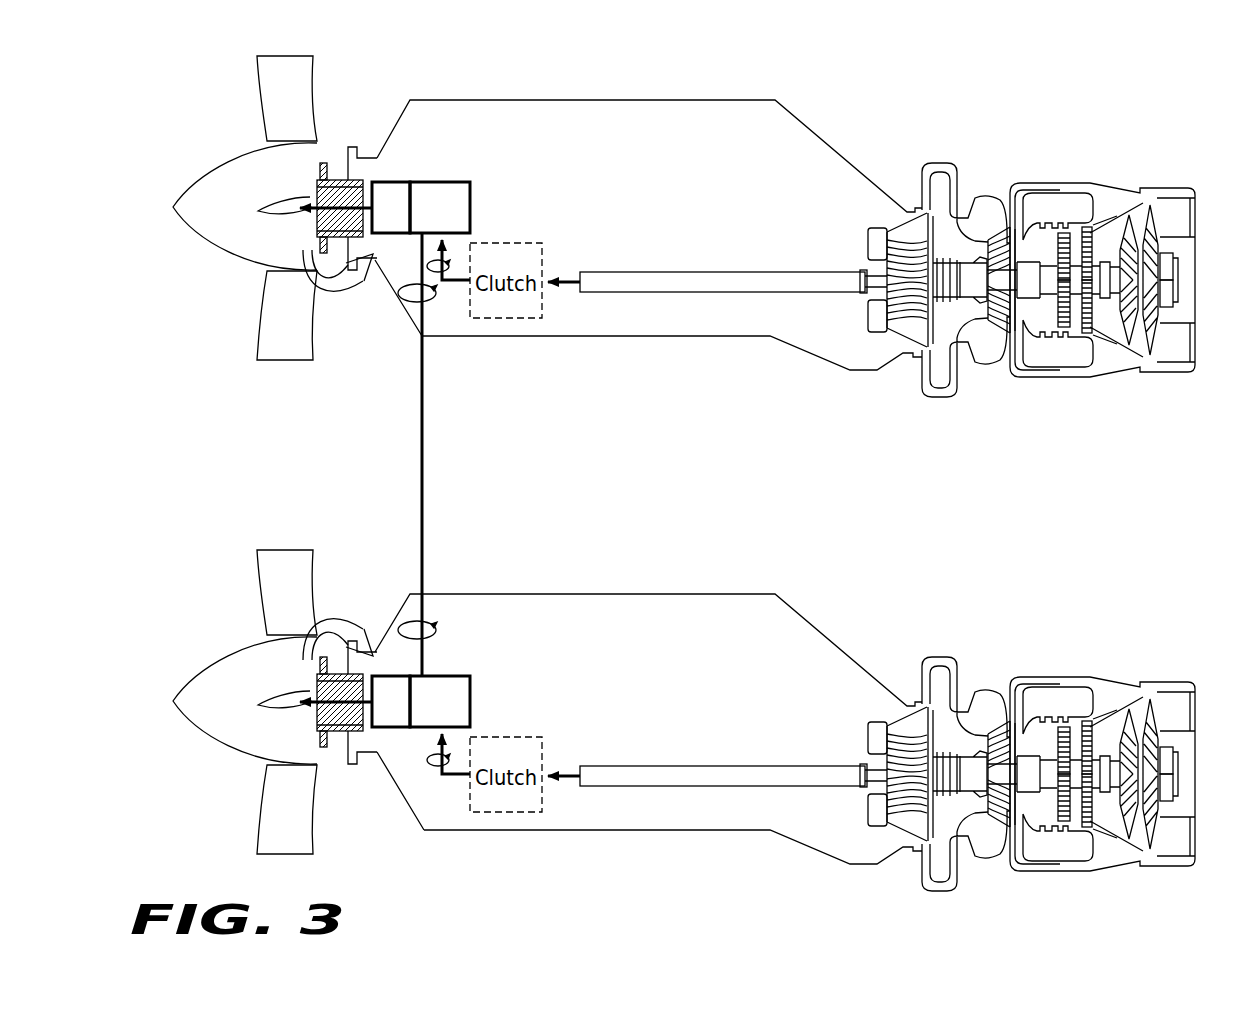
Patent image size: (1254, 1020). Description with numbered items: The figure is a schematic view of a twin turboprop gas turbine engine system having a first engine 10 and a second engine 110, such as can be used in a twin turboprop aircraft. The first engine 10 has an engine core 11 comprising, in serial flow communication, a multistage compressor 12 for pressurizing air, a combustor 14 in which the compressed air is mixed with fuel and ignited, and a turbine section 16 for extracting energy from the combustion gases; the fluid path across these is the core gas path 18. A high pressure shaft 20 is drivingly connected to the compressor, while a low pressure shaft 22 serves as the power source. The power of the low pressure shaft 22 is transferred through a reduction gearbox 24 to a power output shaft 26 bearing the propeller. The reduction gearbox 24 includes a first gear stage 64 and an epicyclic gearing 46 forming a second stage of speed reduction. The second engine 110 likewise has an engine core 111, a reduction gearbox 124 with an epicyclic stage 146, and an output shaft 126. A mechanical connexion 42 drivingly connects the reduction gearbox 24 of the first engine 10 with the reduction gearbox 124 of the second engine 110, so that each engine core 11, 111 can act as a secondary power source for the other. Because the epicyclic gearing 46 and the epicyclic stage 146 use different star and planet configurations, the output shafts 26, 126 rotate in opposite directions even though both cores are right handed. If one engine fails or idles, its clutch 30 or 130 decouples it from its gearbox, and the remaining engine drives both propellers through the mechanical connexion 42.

The first engine 10 is at (1050, 689).
The engine core 11 is at (1164, 671).
The multistage compressor 12 is at (981, 738).
The combustor 14 is at (1087, 679).
The turbine section 16 is at (1049, 739).
The core gas path 18 is at (1020, 679).
The high pressure shaft 20 is at (1040, 757).
The low pressure shaft 22 is at (986, 761).
The reduction gearbox 24 is at (507, 637).
The power output shaft 26 is at (335, 672).
The clutch 30 is at (516, 817).
The mechanical connexion 42 is at (425, 463).
The epicyclic gearing 46 is at (397, 673).
The first gear stage 64 is at (446, 673).
The second engine 110 is at (1052, 208).
The engine core 111 is at (1165, 173).
The reduction gearbox 124 is at (505, 144).
The output shaft 126 is at (336, 178).
The clutch 130 is at (514, 320).
The epicyclic stage 146 is at (392, 179).